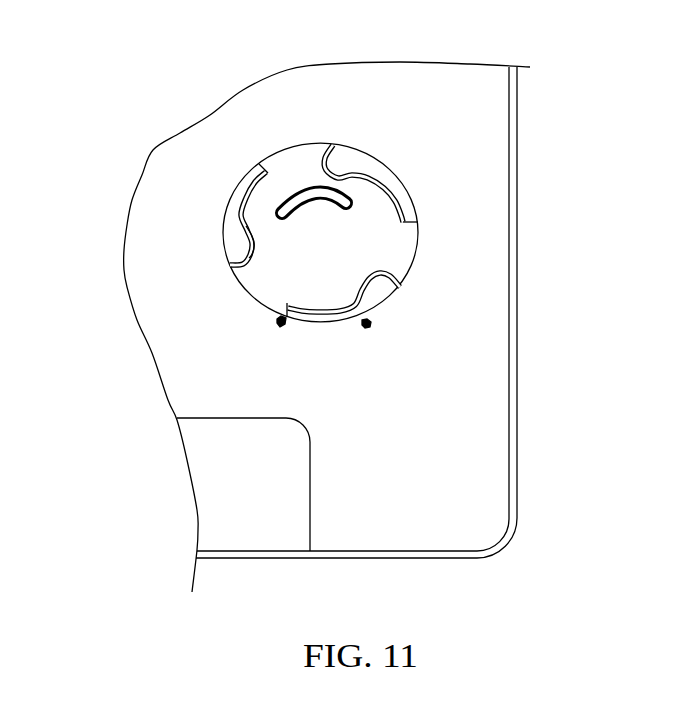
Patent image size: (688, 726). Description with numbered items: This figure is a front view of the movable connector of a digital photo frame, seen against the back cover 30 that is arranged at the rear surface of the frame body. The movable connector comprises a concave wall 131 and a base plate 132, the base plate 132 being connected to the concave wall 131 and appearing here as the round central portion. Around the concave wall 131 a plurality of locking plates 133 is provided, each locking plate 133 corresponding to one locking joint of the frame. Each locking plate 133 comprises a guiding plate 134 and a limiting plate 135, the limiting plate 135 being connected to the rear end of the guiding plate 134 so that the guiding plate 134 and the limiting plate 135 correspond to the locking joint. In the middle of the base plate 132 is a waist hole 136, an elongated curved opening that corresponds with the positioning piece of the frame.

The back cover 30 is at (485, 354).
The concave wall 131 is at (252, 295).
The base plate 132 is at (292, 168).
The locking plate 133 is at (382, 172).
The guiding plate 134 is at (247, 182).
The limiting plate 135 is at (243, 248).
The waist hole 136 is at (325, 205).